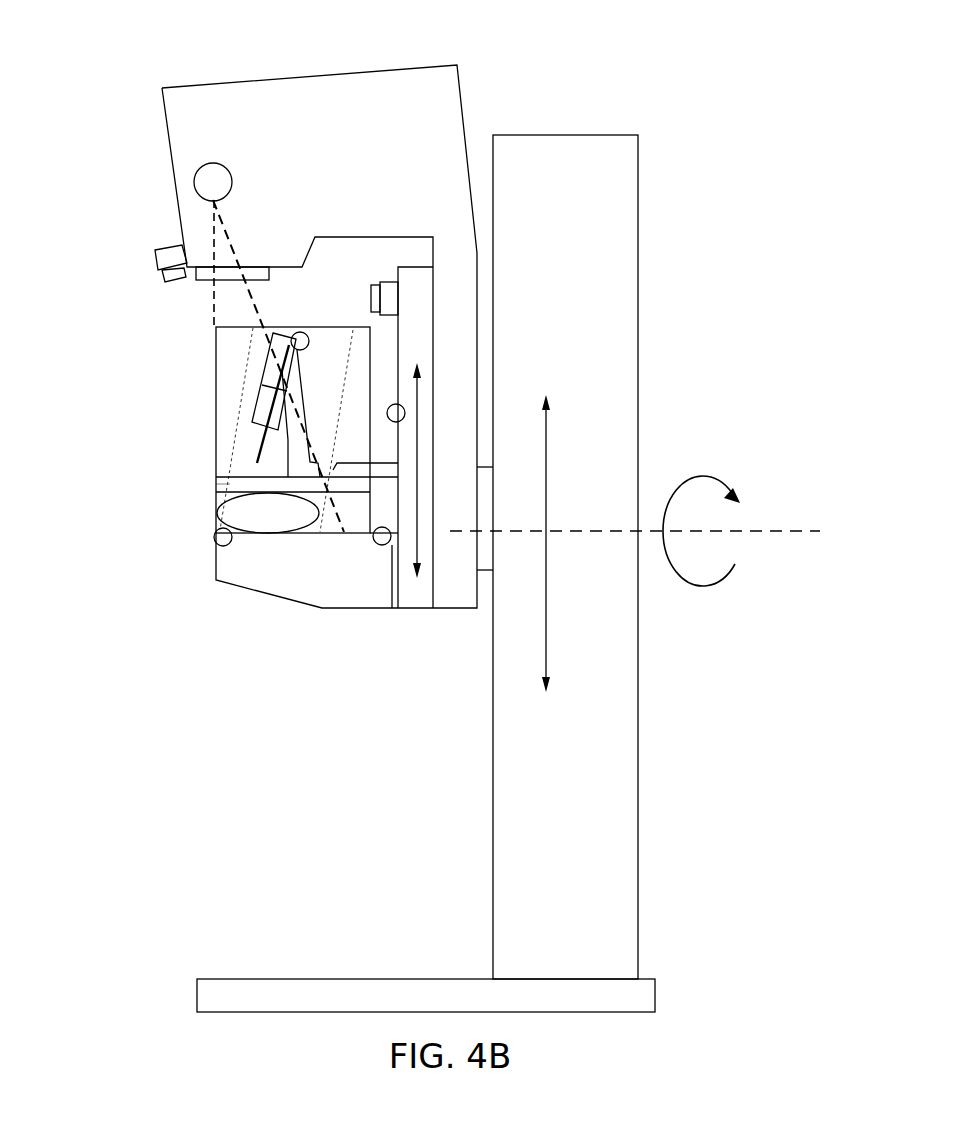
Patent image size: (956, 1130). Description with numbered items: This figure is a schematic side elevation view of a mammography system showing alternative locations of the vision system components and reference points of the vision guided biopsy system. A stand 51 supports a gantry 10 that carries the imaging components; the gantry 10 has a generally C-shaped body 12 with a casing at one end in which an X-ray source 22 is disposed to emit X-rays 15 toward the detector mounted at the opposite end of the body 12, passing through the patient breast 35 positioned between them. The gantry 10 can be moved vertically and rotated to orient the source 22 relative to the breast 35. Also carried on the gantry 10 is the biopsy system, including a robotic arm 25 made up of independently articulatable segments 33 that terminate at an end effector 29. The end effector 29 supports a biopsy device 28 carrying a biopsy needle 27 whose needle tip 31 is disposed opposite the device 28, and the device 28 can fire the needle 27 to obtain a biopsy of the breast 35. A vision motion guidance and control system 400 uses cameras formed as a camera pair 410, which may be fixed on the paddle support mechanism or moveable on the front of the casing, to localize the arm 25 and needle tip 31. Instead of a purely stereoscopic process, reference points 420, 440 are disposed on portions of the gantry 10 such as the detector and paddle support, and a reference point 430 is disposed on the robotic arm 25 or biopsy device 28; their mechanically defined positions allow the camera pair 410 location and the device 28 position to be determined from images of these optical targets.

The gantry 10 is at (204, 50).
The C-shaped body 12 is at (378, 90).
The X-ray source 22 is at (232, 182).
The X-rays 15 is at (226, 220).
The vision motion guidance and control system 400 is at (154, 232).
The camera pair 410 is at (148, 258).
The reference point 430 is at (291, 342).
The end effector 29 is at (290, 362).
The biopsy device 28 is at (254, 412).
The biopsy needle 27 is at (262, 448).
The needle tip 31 is at (283, 470).
The reference point 440 is at (226, 486).
The patient breast 35 is at (218, 511).
The reference point 420 is at (378, 547).
The stand 51 is at (638, 248).
The robotic arm 25 is at (332, 392).
The segments 33 is at (307, 415).